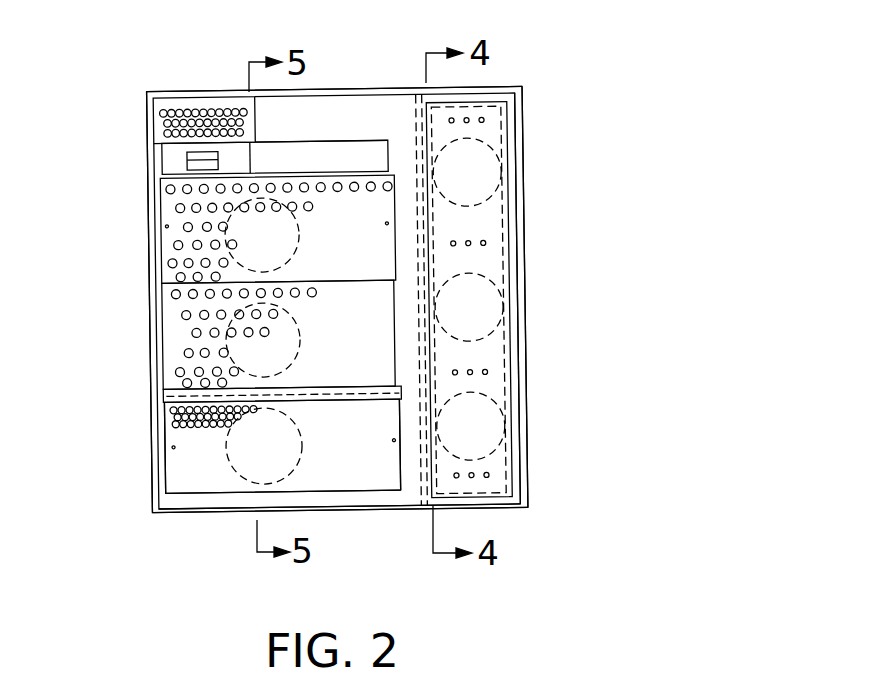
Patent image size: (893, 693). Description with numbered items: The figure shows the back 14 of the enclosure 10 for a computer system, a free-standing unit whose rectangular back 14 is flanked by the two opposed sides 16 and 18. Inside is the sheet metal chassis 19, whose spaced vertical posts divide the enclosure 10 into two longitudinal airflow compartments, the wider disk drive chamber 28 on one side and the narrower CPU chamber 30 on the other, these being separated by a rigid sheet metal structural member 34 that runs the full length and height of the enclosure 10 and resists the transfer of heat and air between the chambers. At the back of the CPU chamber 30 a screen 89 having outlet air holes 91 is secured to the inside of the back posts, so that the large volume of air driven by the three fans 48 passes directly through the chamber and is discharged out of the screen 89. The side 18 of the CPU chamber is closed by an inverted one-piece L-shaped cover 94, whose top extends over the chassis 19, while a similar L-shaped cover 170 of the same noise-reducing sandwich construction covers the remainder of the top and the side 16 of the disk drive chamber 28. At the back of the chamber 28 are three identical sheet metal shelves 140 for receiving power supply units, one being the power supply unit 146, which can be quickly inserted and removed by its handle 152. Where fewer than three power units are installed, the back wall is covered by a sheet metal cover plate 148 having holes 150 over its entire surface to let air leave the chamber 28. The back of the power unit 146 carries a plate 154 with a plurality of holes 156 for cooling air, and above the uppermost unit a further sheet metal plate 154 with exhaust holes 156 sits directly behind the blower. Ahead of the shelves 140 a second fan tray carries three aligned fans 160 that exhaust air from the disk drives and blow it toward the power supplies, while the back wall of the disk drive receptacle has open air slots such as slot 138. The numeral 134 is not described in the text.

The enclosure 10 is at (512, 82).
The L-shaped cover 94 is at (492, 85).
The back 14 is at (528, 132).
The side 16 is at (527, 276).
The side 18 is at (152, 322).
The chassis 19 is at (177, 507).
The compartment 28 is at (160, 478).
The compartment 30 is at (485, 372).
The structural member 34 is at (427, 468).
The fans 48 is at (472, 397).
The screen 89 is at (473, 217).
The holes 91 is at (488, 243).
The bottom rail 134 is at (327, 493).
The open air slot 138 is at (162, 450).
The shelves 140 is at (203, 493).
The power supply unit 146 is at (373, 485).
The cover plate 148 is at (375, 258).
The holes 150 is at (172, 187).
The handle 152 is at (167, 411).
The plate 154 is at (374, 472).
The holes 156 is at (165, 118).
The fans 160 is at (276, 185).
The L-shaped cover 170 is at (168, 95).